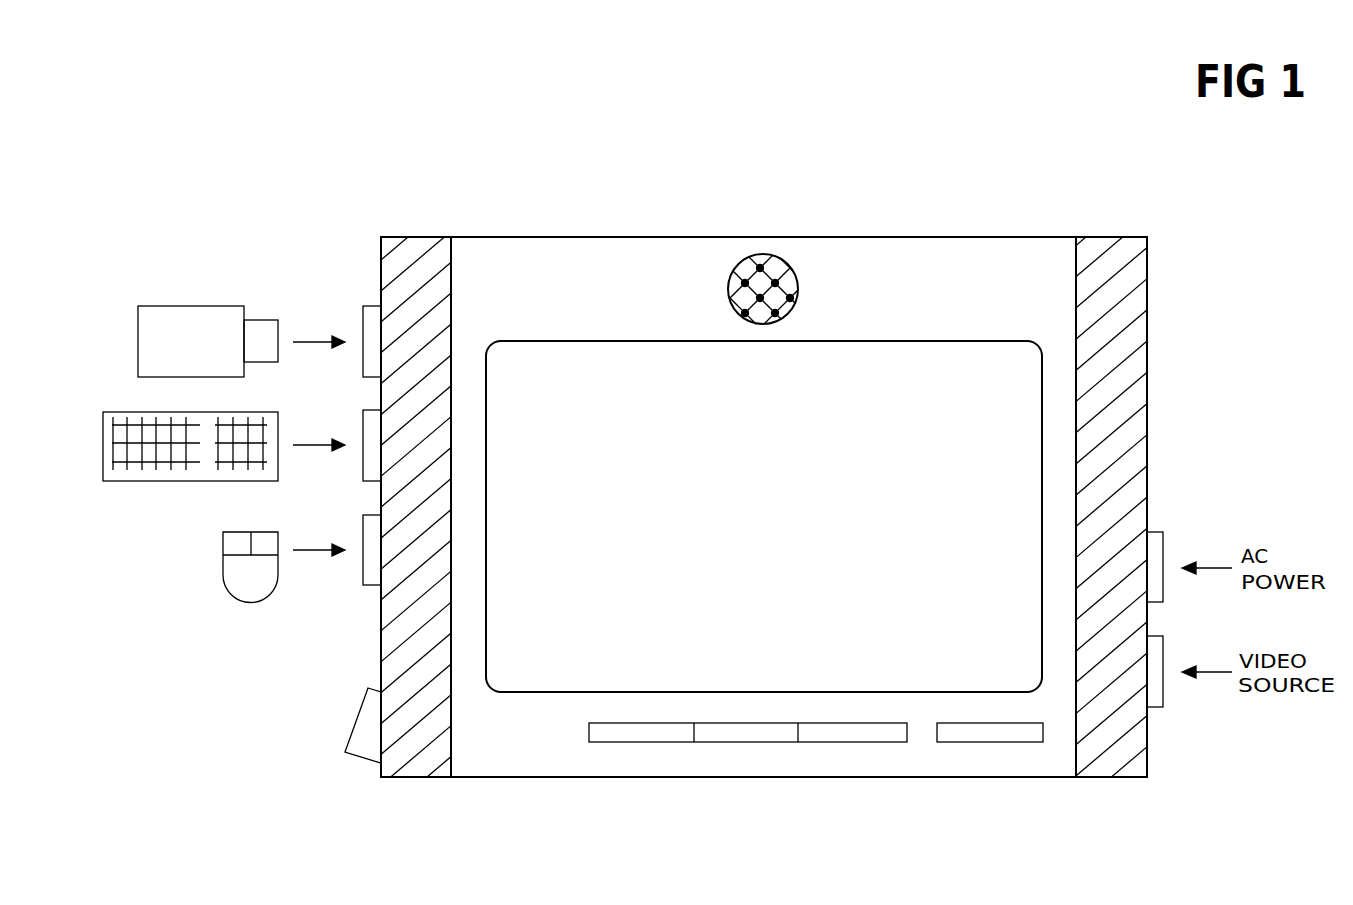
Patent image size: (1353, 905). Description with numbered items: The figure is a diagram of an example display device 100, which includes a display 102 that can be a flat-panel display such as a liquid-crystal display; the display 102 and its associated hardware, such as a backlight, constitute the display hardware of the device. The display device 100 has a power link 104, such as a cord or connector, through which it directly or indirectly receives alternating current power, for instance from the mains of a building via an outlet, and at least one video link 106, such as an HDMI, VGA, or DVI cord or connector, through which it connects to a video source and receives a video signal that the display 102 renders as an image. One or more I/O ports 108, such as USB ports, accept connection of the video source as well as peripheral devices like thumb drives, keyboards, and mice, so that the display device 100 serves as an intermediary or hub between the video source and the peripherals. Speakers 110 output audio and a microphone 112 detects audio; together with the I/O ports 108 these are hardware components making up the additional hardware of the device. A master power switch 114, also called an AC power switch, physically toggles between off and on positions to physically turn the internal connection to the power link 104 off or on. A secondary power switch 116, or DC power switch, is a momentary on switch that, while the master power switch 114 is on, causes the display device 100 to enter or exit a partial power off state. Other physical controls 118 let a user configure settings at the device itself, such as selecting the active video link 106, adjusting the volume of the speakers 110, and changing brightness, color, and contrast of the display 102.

The display device 100 is at (258, 151).
The display 102 is at (783, 527).
The power link 104 is at (1163, 540).
The video link 106 is at (1163, 643).
The I/O ports 108 is at (363, 568).
The speakers 110 is at (405, 250).
The microphone 112 is at (768, 253).
The master power switch 114 is at (347, 738).
The secondary power switch 116 is at (983, 742).
The physical controls 118 is at (740, 742).